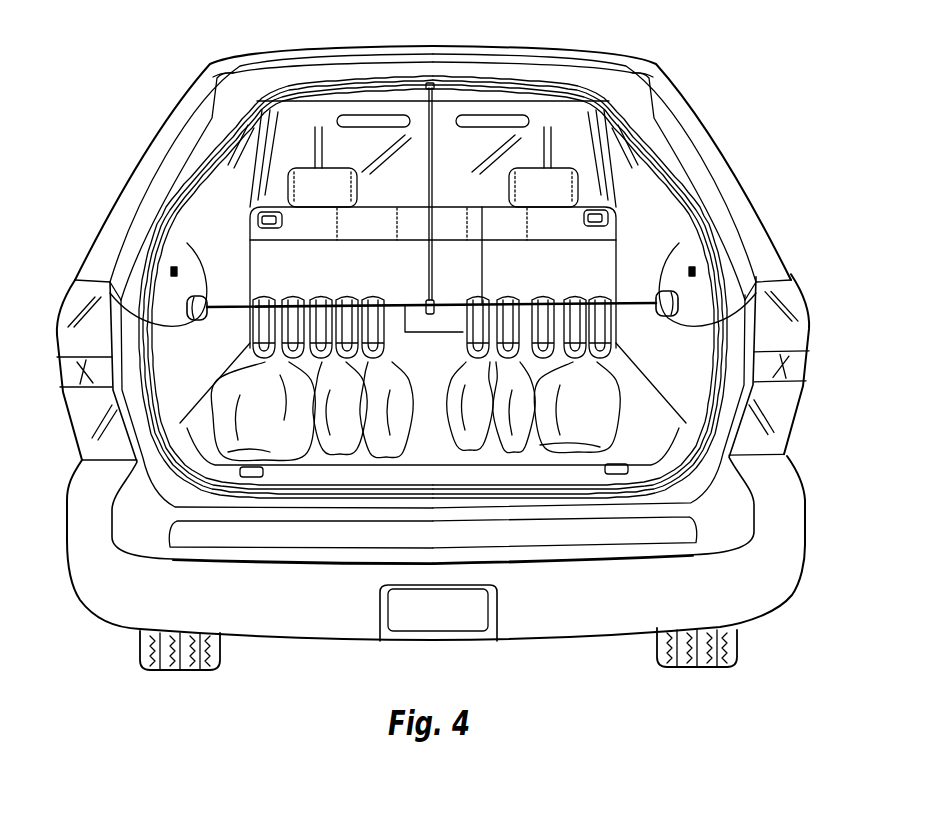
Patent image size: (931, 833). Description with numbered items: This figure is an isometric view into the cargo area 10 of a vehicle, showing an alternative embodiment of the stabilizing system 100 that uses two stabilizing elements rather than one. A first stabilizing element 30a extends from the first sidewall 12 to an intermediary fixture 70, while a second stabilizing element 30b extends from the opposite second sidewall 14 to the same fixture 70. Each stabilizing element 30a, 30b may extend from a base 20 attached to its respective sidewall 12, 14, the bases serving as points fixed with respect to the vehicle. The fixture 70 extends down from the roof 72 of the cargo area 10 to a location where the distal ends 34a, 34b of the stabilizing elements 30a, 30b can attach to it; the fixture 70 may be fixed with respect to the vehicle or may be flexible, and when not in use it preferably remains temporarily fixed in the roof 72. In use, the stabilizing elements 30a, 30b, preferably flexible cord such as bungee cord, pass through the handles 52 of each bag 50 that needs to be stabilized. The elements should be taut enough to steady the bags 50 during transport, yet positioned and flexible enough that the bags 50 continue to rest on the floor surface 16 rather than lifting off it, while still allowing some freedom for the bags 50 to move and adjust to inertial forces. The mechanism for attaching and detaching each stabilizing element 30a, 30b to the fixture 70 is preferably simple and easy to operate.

The cargo area 10 is at (553, 236).
The first sidewall 12 is at (655, 275).
The second sidewall 14 is at (187, 243).
The floor surface 16 is at (440, 428).
The base 20 is at (172, 268).
The first stabilizing element 30a is at (680, 303).
The second stabilizing element 30b is at (188, 305).
The distal end of first stabilizing element 34a is at (458, 303).
The distal end of second stabilizing element 34b is at (405, 334).
The bag 50 is at (299, 432).
The handles 52 is at (297, 298).
The intermediary fixture 70 is at (427, 197).
The roof 72 is at (492, 96).
The stabilizing system 100 is at (426, 185).